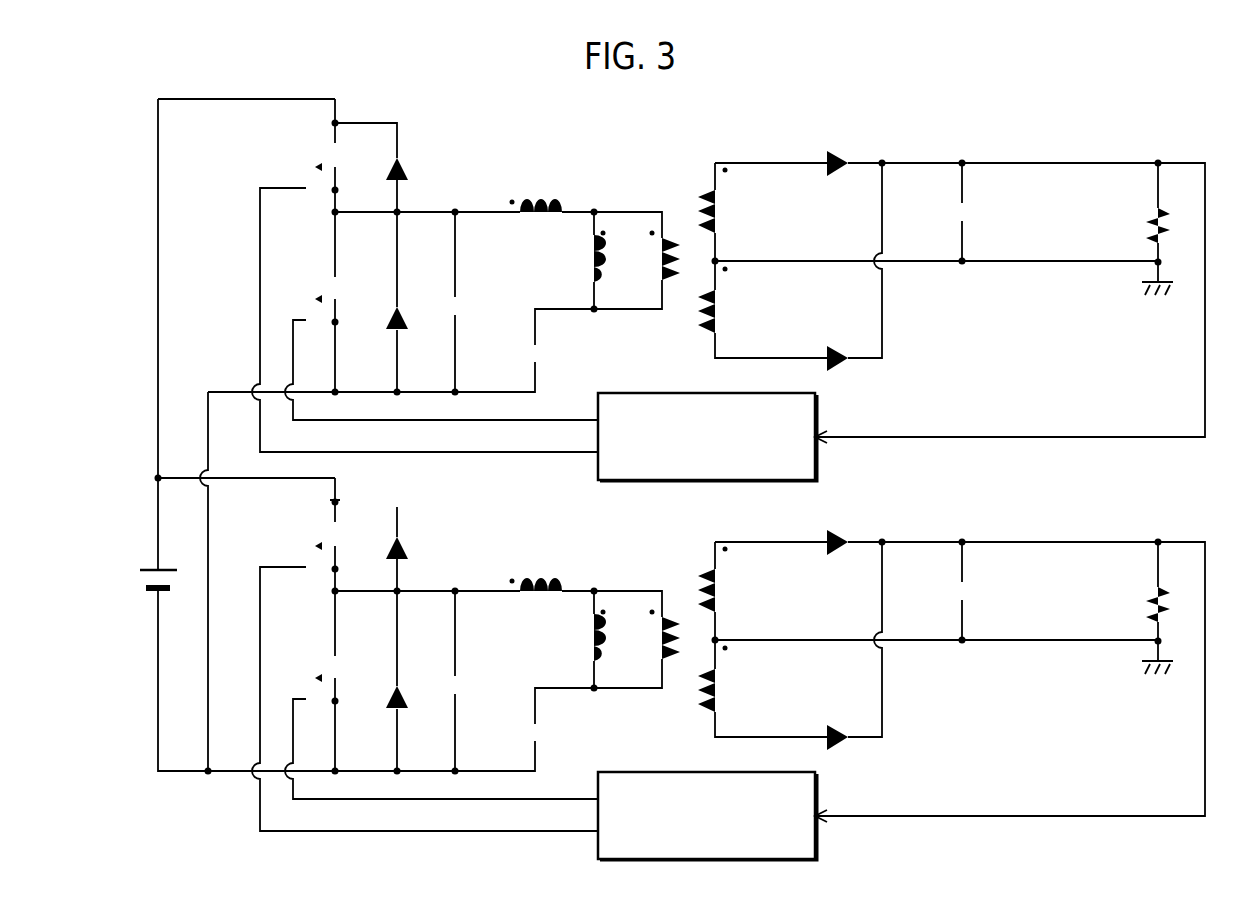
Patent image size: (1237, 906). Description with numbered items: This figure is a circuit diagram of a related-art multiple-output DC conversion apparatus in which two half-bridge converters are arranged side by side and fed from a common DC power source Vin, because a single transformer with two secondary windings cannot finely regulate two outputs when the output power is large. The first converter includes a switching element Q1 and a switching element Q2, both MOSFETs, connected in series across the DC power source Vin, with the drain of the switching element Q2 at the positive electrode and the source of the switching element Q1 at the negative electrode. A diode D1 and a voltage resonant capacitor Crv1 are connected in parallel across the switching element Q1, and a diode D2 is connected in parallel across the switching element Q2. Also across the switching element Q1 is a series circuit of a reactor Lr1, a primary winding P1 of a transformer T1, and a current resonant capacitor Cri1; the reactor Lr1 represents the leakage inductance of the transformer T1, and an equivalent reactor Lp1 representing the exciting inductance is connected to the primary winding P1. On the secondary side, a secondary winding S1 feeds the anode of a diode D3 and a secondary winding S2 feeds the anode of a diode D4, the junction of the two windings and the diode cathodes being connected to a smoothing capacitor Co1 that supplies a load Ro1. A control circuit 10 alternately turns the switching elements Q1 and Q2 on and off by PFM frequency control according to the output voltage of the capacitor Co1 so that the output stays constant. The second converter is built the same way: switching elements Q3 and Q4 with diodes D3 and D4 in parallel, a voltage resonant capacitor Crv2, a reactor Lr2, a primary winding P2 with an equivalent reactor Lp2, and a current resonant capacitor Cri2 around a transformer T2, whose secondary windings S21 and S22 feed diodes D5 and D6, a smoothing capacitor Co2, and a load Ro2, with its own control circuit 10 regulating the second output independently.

The control circuit 10 is at (815, 458).
The switching element Q1 is at (303, 299).
The switching element Q2 is at (303, 167).
The switching element Q3 is at (303, 678).
The switching element Q4 is at (303, 546).
The diode D1 is at (387, 333).
The diode D2 is at (409, 156).
The diode D3 is at (837, 149).
The diode D4 is at (618, 438).
The rectifier diode D5 is at (837, 528).
The rectifier diode D6 is at (837, 723).
The voltage resonance capacitor Crv1 is at (481, 306).
The voltage resonance capacitor Crv2 is at (481, 685).
The current resonance capacitor Cri1 is at (559, 354).
The current resonance capacitor Cri2 is at (559, 733).
The reactor Lr1 is at (541, 190).
The resonance inductor Lr2 is at (541, 569).
The equivalent reactor Lp1 is at (579, 258).
The inductor Lp2 is at (579, 637).
The primary winding P1 is at (656, 259).
The primary winding P2 is at (656, 638).
The transformer T1 is at (692, 245).
The transformer T2 is at (692, 624).
The secondary winding S1 is at (723, 211).
The secondary winding S2 is at (723, 311).
The secondary winding S21 is at (728, 590).
The secondary winding S22 is at (728, 690).
The smoothing capacitor Co1 is at (982, 214).
The output capacitor Co2 is at (982, 593).
The load Ro1 is at (1135, 225).
The load resistor Ro2 is at (1135, 604).
The DC power source Vin is at (169, 566).